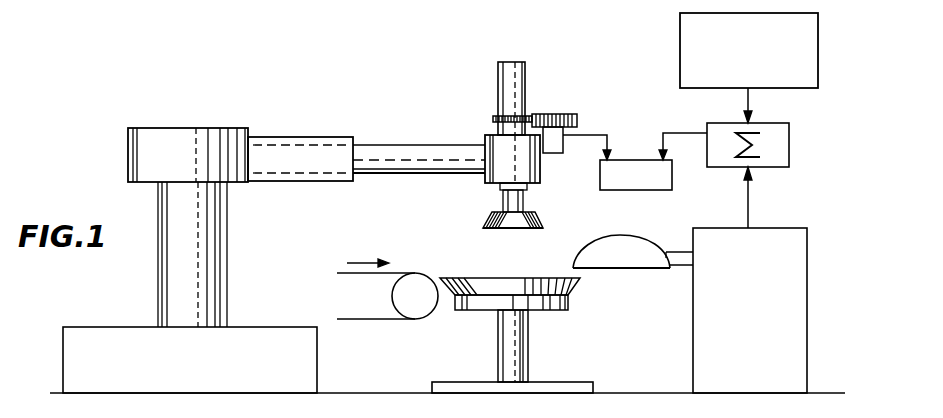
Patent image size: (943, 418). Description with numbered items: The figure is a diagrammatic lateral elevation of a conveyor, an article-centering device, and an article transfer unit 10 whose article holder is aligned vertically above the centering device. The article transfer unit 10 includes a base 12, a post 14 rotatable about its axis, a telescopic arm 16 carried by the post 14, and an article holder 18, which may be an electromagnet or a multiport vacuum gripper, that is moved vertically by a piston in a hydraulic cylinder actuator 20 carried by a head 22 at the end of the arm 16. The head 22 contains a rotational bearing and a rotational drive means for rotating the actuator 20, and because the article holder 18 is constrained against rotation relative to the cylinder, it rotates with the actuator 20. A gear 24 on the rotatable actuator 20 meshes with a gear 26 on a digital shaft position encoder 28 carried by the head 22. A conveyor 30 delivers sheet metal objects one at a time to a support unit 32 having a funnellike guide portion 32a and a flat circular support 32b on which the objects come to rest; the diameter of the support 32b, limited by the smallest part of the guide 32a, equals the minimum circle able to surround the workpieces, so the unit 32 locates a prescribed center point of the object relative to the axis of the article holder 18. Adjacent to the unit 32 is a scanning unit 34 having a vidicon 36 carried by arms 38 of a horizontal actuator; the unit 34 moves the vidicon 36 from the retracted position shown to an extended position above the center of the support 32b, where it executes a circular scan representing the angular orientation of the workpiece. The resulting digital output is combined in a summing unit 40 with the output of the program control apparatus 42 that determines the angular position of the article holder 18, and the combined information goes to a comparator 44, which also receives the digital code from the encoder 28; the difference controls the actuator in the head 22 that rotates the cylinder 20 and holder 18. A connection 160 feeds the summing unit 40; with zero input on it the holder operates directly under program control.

The article transfer unit 10 is at (240, 250).
The base 12 is at (205, 378).
The post 14 is at (215, 288).
The telescopic arm 16 is at (371, 143).
The article holder 18 is at (482, 222).
The hydraulic cylinder actuator 20 is at (525, 79).
The head 22 is at (486, 178).
The gear 24 is at (493, 119).
The gear 26 is at (569, 114).
The digital shaft position encoder 28 is at (552, 154).
The conveyor 30 is at (387, 276).
The support unit 32 is at (480, 328).
The funnellike guide portion 32a is at (497, 262).
The flat circular support 32b is at (546, 312).
The scanning unit 34 is at (807, 258).
The vidicon 36 is at (604, 241).
The arms 38 is at (686, 268).
The summing unit 40 is at (789, 135).
The program control apparatus 42 is at (680, 50).
The comparator 44 is at (603, 191).
The connection 160 is at (750, 196).